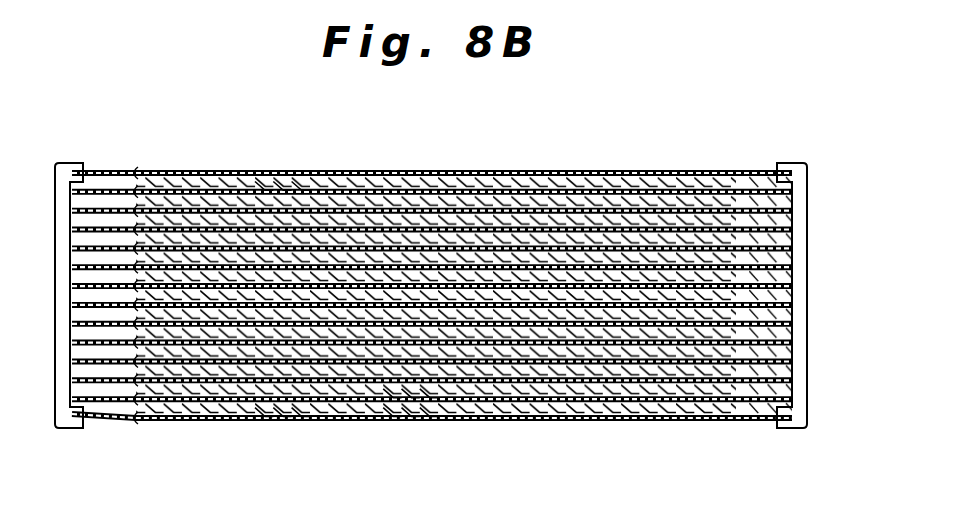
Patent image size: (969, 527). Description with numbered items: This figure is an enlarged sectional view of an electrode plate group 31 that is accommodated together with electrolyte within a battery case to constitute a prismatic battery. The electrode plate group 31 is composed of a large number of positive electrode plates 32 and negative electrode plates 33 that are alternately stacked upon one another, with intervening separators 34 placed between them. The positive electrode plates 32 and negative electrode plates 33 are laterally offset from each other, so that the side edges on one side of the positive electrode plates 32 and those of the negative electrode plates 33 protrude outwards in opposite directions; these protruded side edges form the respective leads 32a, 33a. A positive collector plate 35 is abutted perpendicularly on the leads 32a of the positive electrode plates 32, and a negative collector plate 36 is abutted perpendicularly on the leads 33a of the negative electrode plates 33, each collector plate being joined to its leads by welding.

The electrode plate group 31 is at (368, 170).
The positive electrode plate 32 is at (497, 404).
The lead 32a is at (768, 362).
The negative electrode plate 33 is at (290, 410).
The lead 33a is at (84, 368).
The separator 34 is at (407, 405).
The positive collector plate 35 is at (797, 294).
The negative collector plate 36 is at (63, 240).